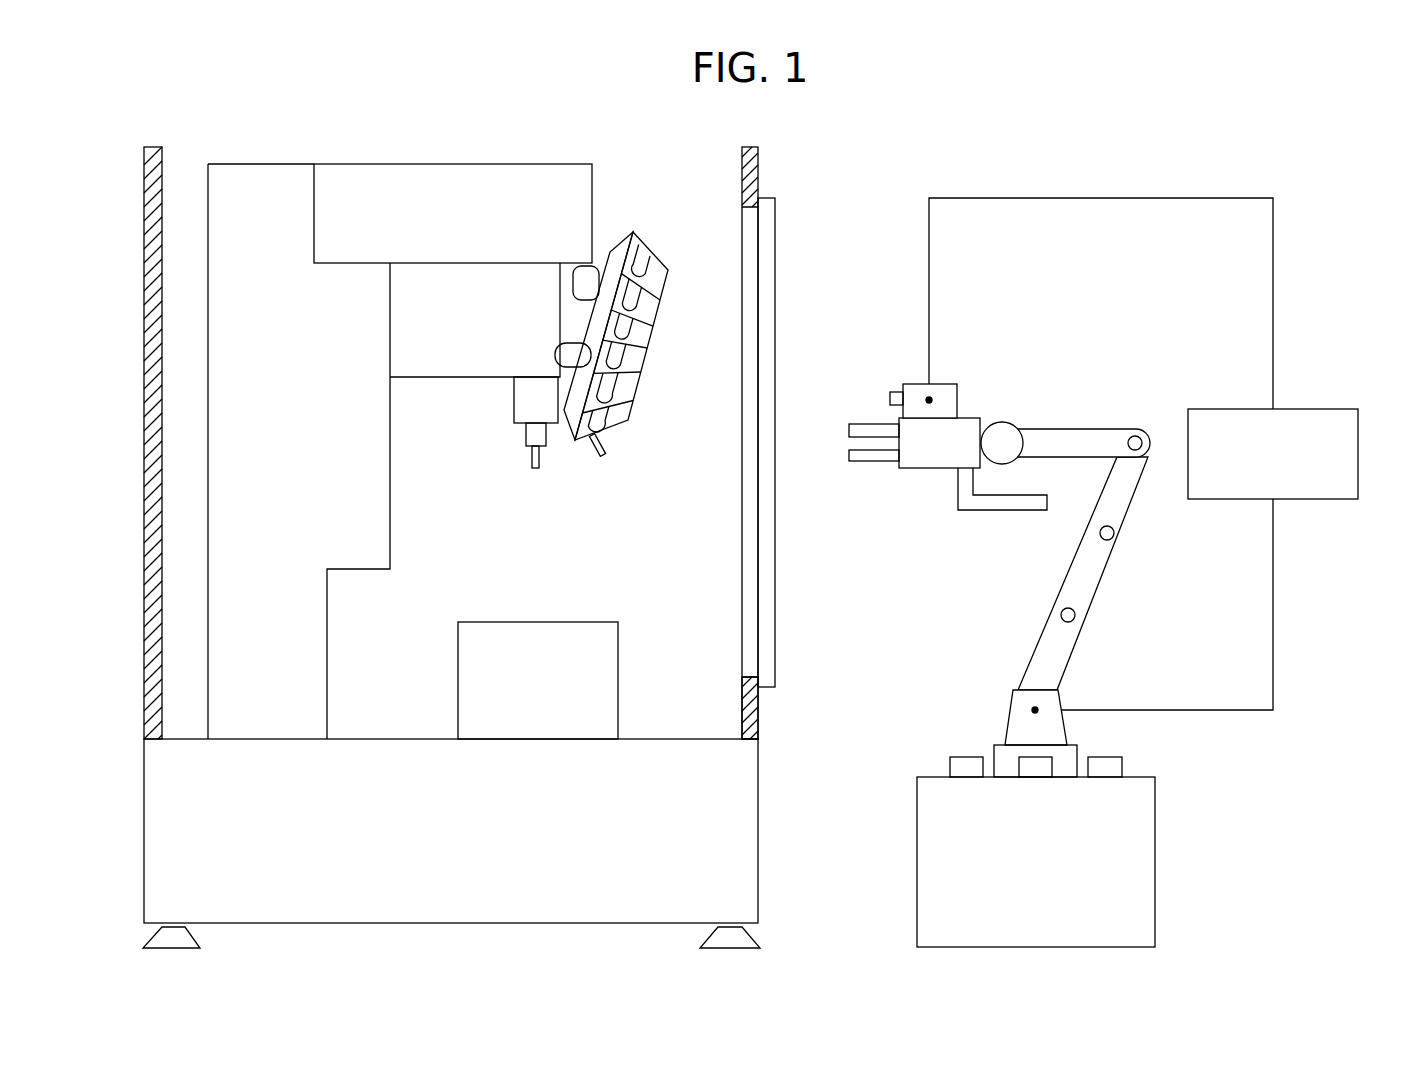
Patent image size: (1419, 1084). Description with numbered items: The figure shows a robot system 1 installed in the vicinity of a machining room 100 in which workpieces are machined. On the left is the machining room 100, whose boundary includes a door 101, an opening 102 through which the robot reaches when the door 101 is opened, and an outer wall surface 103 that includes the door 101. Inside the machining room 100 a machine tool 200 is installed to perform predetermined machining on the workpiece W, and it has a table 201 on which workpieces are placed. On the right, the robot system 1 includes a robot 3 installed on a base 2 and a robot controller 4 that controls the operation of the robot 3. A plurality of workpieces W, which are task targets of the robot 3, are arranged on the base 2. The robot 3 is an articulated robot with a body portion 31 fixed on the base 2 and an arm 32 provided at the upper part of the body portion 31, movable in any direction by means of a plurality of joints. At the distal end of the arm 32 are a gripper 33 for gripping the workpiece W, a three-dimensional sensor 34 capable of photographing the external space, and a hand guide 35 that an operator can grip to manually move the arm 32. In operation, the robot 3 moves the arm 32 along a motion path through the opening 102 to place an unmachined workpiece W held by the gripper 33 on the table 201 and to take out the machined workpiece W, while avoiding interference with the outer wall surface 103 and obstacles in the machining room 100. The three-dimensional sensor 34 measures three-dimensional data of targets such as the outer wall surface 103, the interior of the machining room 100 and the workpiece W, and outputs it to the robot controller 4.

The robot system 1 is at (1082, 305).
The base 2 is at (917, 858).
The robot 3 is at (1112, 392).
The robot controller 4 is at (1307, 409).
The body portion 31 is at (1013, 705).
The arm 32 is at (1050, 430).
The gripper 33 is at (873, 462).
The three-dimensional sensor 34 is at (943, 384).
The hand guide 35 is at (1000, 510).
The workpiece W is at (1103, 760).
The machining room 100 is at (795, 160).
The door 101 is at (775, 232).
The opening 102 is at (750, 293).
The outer wall surface 103 is at (758, 707).
The machine tool 200 is at (627, 200).
The table 201 is at (584, 622).